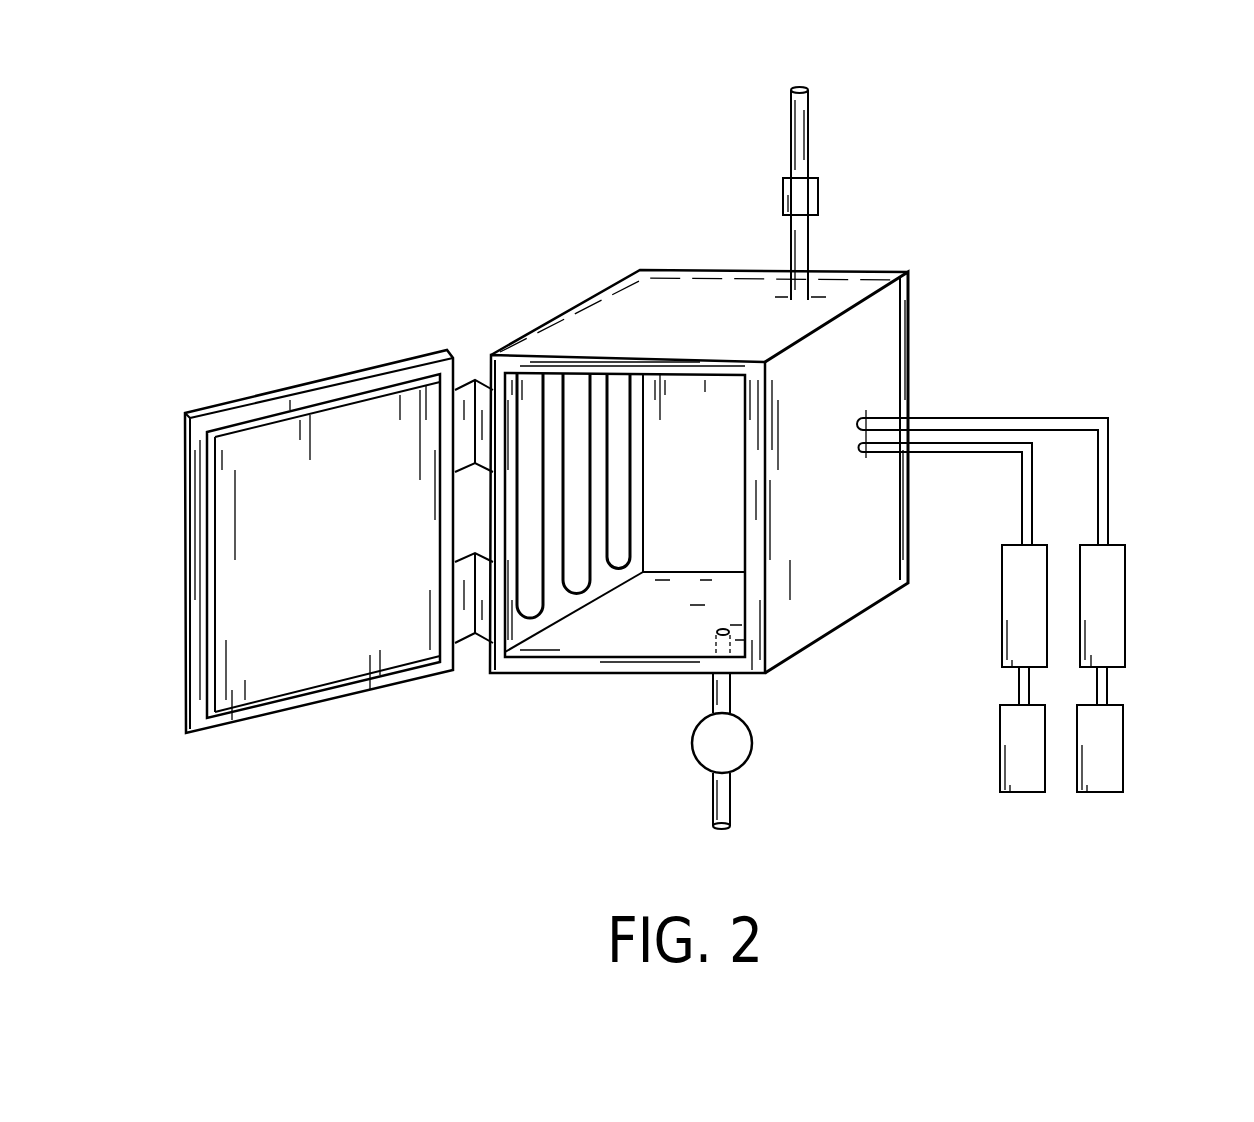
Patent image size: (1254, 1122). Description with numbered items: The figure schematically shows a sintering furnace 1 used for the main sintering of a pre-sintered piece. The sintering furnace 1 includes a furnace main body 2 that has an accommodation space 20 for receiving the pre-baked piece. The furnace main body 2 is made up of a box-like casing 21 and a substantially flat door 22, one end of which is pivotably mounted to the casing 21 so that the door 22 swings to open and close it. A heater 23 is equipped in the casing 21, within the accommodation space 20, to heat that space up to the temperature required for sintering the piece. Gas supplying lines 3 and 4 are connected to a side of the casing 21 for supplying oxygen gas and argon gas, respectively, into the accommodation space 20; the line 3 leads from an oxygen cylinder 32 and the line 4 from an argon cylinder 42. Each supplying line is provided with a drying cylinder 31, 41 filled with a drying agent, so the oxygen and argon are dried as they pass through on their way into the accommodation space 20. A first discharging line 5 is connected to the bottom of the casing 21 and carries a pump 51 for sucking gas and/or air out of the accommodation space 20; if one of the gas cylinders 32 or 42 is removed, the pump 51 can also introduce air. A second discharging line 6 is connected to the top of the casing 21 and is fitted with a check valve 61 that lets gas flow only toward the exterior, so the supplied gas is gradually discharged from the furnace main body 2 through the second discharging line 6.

The sintering furnace 1 is at (998, 157).
The furnace main body 2 is at (538, 296).
The accommodation space 20 is at (680, 612).
The casing 21 is at (657, 284).
The door 22 is at (290, 655).
The heater 23 is at (612, 572).
The gas supplying line 3 is at (940, 447).
The drying cylinder 31 is at (1008, 632).
The oxygen cylinder 32 is at (1005, 775).
The gas supplying line 4 is at (1012, 416).
The drying cylinder 41 is at (1118, 576).
The argon cylinder 42 is at (1115, 725).
The first discharging line 5 is at (733, 690).
The pump 51 is at (707, 758).
The second discharging line 6 is at (803, 245).
The check valve 61 is at (818, 197).